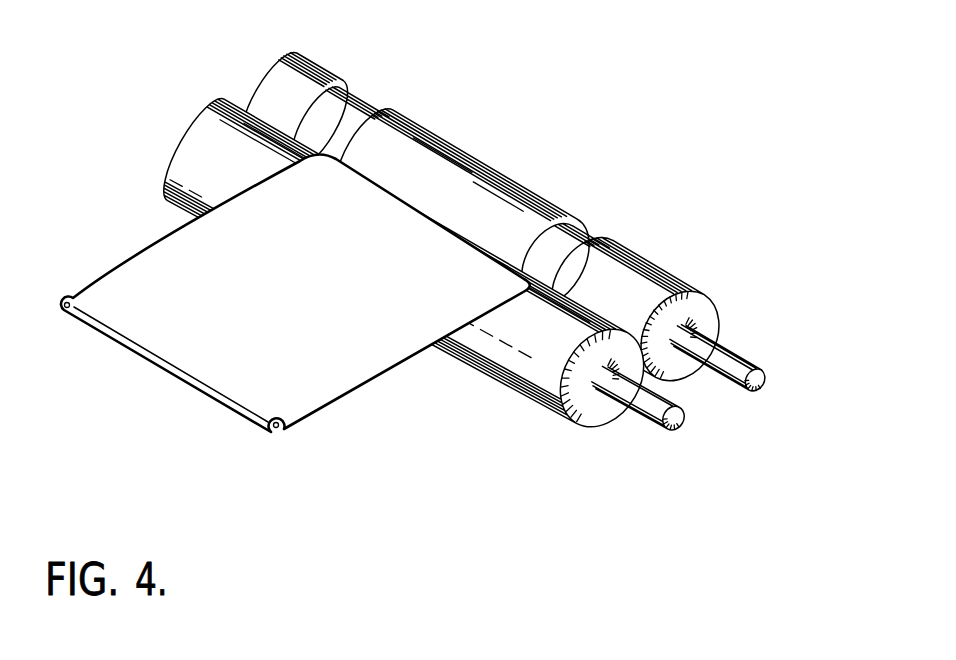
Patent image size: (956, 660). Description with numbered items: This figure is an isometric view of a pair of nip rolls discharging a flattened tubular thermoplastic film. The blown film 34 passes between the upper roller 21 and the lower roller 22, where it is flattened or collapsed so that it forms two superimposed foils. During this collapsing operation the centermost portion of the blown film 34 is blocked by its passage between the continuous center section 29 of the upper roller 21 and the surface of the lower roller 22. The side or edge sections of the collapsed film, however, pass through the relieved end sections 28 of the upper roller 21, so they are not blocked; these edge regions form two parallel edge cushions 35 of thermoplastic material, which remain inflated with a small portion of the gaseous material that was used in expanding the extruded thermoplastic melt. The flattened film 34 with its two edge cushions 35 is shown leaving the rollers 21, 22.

The upper roller 21 is at (505, 222).
The lower roller 22 is at (607, 410).
The relieved end sections 28 is at (610, 250).
The central section of first roller 29 is at (415, 197).
The blown film 34 is at (157, 365).
The edge cushions 35 is at (66, 313).